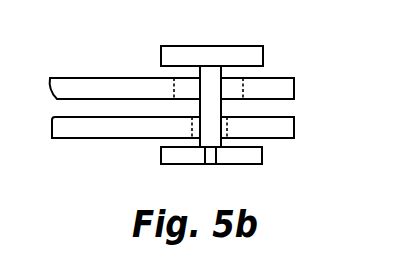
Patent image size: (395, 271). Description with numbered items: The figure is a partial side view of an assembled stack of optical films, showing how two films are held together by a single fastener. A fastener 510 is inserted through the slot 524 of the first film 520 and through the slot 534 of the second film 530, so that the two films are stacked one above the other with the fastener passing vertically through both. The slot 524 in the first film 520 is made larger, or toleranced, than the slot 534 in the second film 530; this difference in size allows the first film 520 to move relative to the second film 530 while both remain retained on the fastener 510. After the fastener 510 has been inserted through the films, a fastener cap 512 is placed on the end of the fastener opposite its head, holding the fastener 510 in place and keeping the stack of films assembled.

The fastener 510 is at (213, 50).
The fastener cap 512 is at (175, 157).
The first film 520 is at (123, 85).
The slot 524 is at (233, 88).
The second film 530 is at (105, 130).
The slot 534 is at (227, 124).